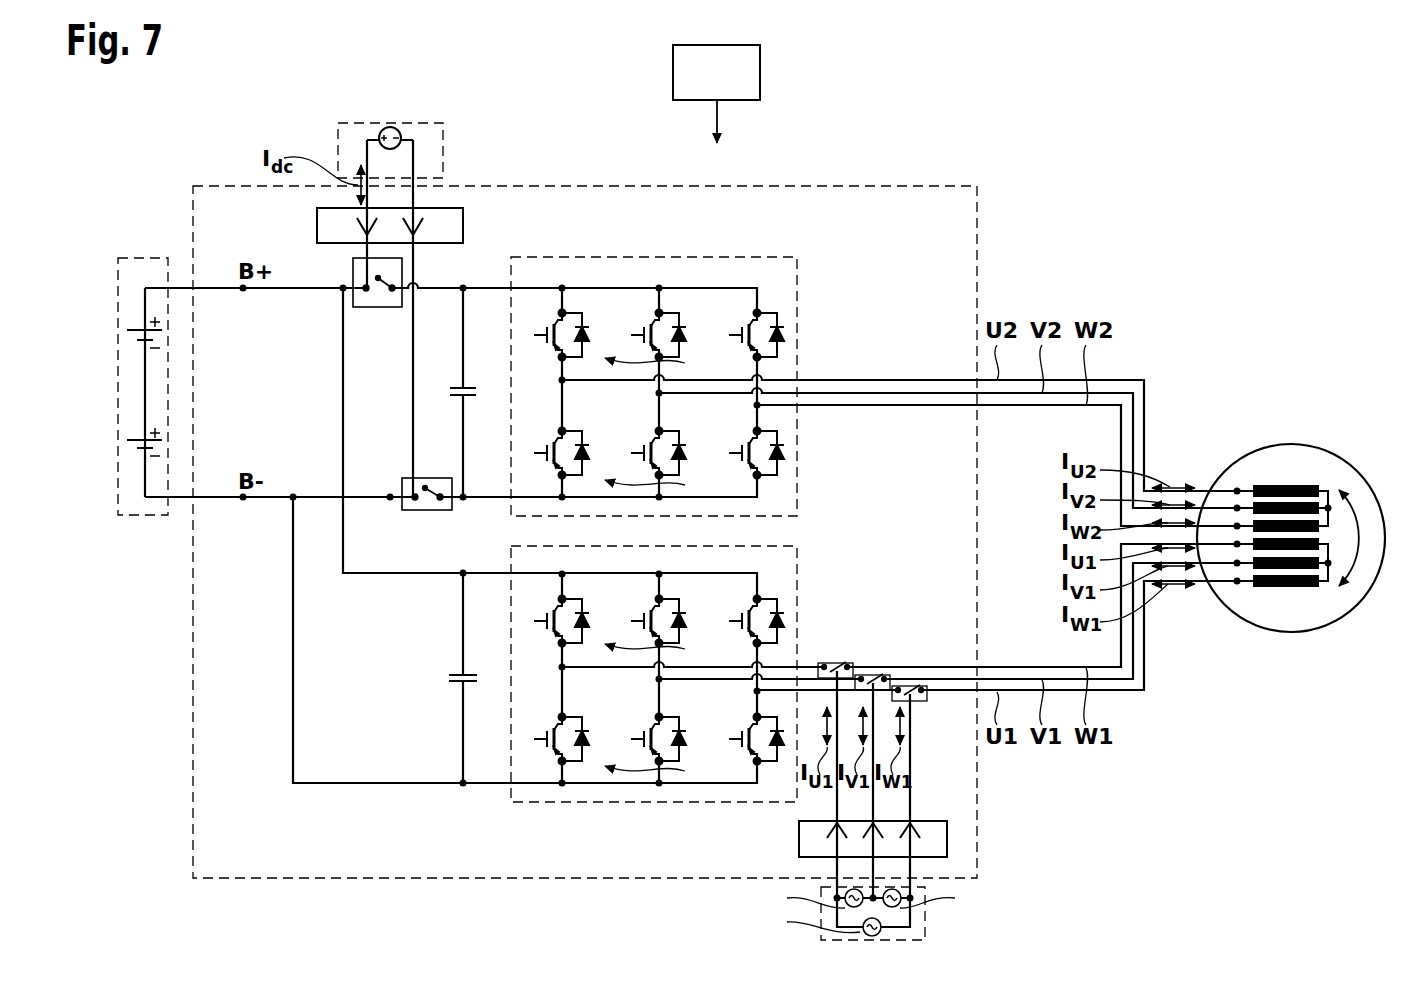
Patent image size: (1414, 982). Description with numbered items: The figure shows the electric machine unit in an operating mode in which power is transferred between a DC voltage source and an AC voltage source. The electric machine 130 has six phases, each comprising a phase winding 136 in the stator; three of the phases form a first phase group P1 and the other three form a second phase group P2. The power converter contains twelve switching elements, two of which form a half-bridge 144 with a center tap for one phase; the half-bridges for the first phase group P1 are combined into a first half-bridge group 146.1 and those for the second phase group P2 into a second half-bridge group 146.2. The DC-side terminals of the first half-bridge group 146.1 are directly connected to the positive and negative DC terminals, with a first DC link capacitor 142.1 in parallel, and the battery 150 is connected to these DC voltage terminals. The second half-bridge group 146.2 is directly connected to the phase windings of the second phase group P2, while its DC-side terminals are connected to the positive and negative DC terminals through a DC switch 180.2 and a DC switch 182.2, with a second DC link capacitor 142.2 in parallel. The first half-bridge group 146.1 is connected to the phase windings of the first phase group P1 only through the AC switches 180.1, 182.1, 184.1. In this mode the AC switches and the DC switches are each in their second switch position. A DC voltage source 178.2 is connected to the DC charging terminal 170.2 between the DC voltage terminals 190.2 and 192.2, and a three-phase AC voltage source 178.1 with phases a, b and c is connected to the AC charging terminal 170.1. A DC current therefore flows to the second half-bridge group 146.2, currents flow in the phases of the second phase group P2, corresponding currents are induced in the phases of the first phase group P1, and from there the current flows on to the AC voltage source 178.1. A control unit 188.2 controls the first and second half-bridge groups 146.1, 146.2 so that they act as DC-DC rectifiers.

The battery 150 is at (150, 258).
The DC voltage source 178.2 is at (338, 160).
The DC voltage terminal 190.2 is at (365, 232).
The DC voltage terminal 192.2 is at (411, 238).
The DC charging terminal 170.2 is at (455, 208).
The DC switch 180.2 is at (378, 307).
The DC switch 182.2 is at (400, 480).
The second DC link capacitor 142.2 is at (470, 397).
The first DC link capacitor 142.1 is at (470, 683).
The second half-bridge group 146.2 is at (800, 275).
The first half-bridge group 146.1 is at (800, 560).
The half-bridge 144 is at (600, 232).
The control unit 188.2 is at (760, 72).
The AC switch 180.1 is at (830, 663).
The AC switch 182.1 is at (872, 674).
The AC switch 184.1 is at (915, 686).
The AC charging terminal 170.1 is at (947, 835).
The AC voltage source 178.1 is at (925, 925).
The electric machine 130 is at (1312, 443).
The phase winding 136 is at (1280, 485).
The second phase group P2 is at (1355, 458).
The first phase group P1 is at (1355, 615).